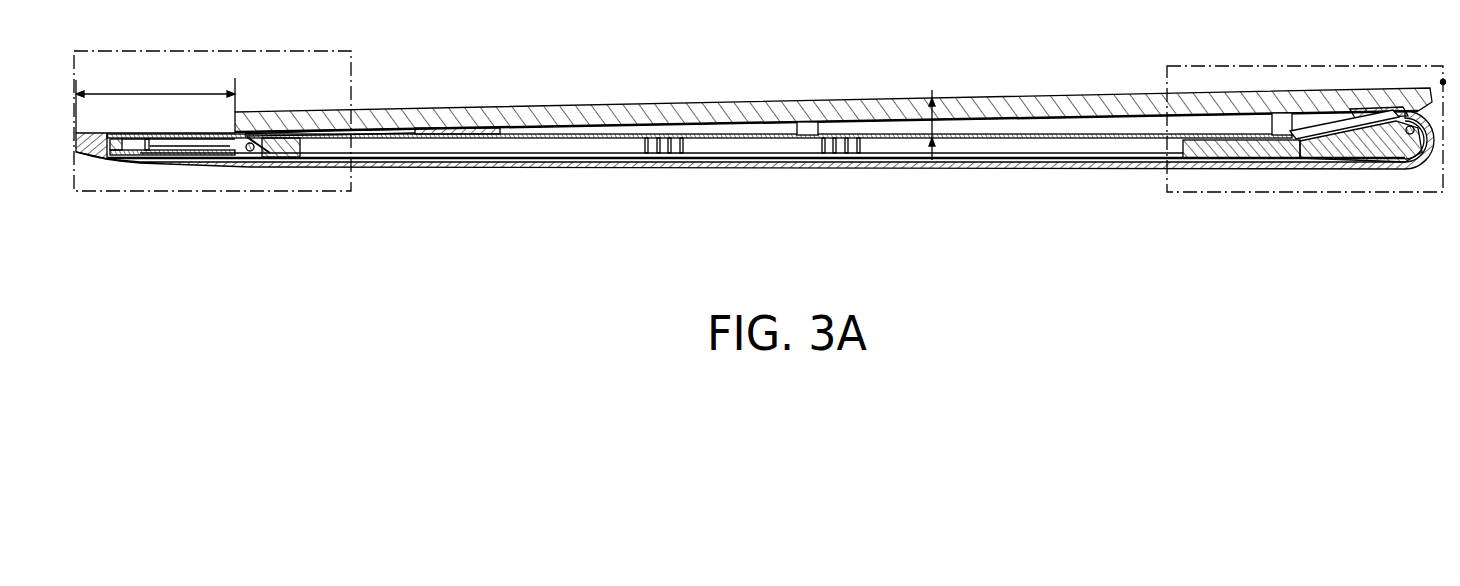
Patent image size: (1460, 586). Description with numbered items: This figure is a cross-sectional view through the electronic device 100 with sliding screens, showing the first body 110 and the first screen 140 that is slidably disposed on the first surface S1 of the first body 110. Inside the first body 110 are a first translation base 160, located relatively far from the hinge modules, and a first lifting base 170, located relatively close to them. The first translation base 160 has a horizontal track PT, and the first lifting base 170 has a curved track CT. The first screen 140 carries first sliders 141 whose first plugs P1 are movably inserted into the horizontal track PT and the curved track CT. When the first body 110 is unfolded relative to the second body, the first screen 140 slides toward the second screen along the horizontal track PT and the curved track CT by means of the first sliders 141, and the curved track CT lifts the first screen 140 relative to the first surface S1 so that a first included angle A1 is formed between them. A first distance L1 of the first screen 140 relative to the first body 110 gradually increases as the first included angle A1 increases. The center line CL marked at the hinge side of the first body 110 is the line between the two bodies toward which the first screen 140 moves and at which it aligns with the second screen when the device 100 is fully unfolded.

The electronic device with sliding screens 100 is at (1410, 284).
The first body 110 is at (872, 168).
The first screen 140 is at (538, 112).
The first slider 141 is at (425, 127).
The first translation base 160 is at (267, 150).
The first lifting base 170 is at (1252, 156).
The curved track CT is at (1322, 150).
The first plug P1 is at (250, 151).
The horizontal track PT is at (202, 147).
The first surface S1 is at (745, 128).
The first included angle A1 is at (933, 125).
The center line CL is at (1443, 82).
The first distance L1 is at (155, 90).